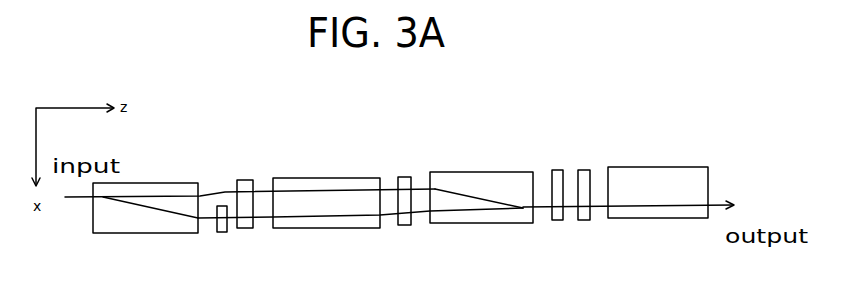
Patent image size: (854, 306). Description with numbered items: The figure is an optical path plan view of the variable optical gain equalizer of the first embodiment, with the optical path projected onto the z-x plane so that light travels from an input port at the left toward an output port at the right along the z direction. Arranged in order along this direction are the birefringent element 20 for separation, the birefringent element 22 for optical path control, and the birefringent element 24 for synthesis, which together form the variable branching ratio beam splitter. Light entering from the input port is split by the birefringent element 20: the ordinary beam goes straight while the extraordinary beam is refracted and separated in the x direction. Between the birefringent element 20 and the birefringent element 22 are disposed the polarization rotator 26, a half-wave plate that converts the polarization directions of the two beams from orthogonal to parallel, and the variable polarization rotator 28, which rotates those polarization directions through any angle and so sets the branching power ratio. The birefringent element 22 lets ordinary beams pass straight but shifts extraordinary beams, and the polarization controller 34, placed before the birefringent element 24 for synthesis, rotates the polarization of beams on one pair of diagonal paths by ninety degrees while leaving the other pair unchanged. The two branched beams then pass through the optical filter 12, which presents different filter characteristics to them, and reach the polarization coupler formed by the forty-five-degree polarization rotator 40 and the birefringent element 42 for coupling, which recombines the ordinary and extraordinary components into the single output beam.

The birefringent element for separation 20 is at (141, 183).
The birefringent element for optical path control 22 is at (325, 176).
The birefringent element for synthesis 24 is at (498, 174).
The polarization rotator 26 is at (221, 236).
The variable polarization rotator 28 is at (243, 178).
The polarization controller 34 is at (404, 175).
The optical filter 12 is at (558, 168).
The 45-degree polarization rotator 40 is at (585, 222).
The birefringent element for coupling 42 is at (661, 169).